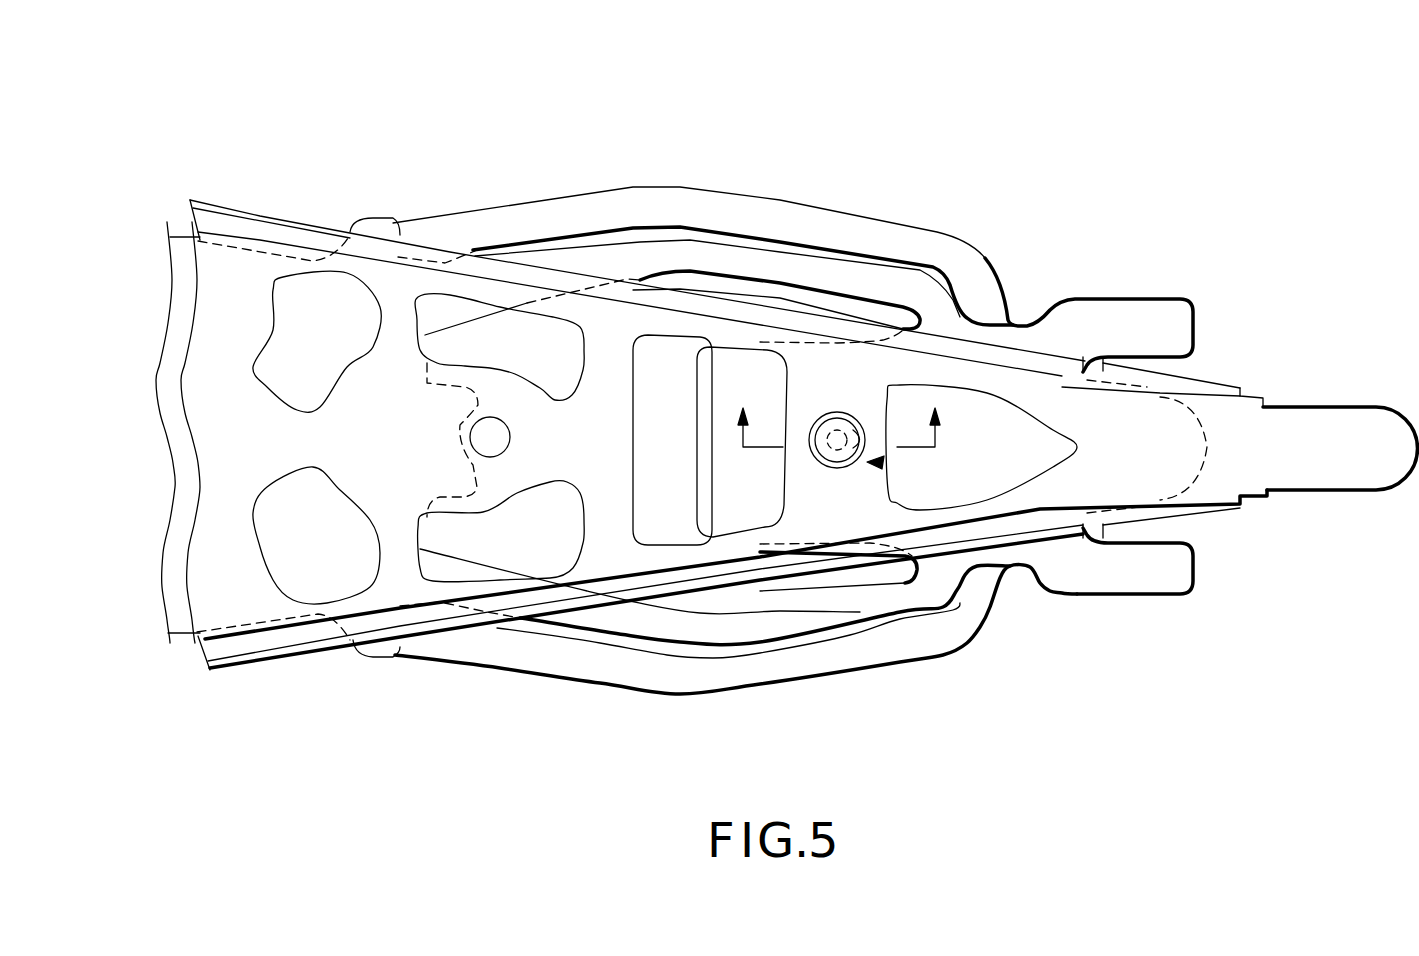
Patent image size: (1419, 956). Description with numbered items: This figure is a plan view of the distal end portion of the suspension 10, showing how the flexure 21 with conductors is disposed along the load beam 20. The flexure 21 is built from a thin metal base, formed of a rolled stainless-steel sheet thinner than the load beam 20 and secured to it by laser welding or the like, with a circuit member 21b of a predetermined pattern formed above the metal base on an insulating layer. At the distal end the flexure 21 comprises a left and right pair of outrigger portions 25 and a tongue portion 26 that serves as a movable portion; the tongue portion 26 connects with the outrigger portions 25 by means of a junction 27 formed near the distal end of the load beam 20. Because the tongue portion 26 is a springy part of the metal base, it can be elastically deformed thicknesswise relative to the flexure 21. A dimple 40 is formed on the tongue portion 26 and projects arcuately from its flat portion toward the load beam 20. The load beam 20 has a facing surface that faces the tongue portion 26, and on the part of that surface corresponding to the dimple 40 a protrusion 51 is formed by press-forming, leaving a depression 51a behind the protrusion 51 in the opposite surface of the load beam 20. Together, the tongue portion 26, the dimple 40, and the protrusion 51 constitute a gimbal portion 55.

The suspension 10 is at (418, 117).
The load beam 20 is at (308, 218).
The flexure 21 is at (172, 266).
The circuit member 21b is at (532, 222).
The outrigger portions 25 is at (737, 257).
The tongue portion 26 is at (705, 463).
The junction 27 is at (928, 295).
The dimple 40 is at (835, 470).
The protrusion 51 is at (823, 412).
The depression 51a is at (853, 428).
The gimbal portion 55 is at (882, 465).